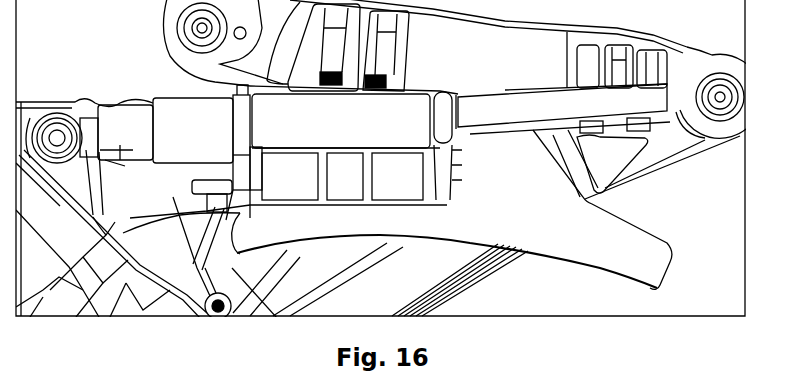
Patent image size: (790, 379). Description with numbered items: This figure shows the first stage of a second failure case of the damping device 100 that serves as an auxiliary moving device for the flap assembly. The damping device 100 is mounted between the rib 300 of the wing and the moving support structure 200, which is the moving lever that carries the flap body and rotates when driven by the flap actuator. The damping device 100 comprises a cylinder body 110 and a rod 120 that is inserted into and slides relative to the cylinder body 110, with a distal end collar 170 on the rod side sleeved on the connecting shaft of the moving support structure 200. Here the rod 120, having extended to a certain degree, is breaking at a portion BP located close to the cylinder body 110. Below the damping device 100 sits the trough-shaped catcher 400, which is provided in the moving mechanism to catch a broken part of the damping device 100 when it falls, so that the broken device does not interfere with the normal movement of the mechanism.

The damping device 100 is at (382, 130).
The cylinder body 110 is at (390, 138).
The rod 120 is at (517, 123).
The distal end collar 170 is at (695, 127).
The moving support structure 200 is at (457, 66).
The rib 300 is at (49, 86).
The catcher 400 is at (530, 218).
The breaking portion BP is at (462, 93).